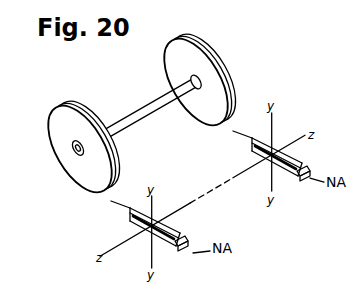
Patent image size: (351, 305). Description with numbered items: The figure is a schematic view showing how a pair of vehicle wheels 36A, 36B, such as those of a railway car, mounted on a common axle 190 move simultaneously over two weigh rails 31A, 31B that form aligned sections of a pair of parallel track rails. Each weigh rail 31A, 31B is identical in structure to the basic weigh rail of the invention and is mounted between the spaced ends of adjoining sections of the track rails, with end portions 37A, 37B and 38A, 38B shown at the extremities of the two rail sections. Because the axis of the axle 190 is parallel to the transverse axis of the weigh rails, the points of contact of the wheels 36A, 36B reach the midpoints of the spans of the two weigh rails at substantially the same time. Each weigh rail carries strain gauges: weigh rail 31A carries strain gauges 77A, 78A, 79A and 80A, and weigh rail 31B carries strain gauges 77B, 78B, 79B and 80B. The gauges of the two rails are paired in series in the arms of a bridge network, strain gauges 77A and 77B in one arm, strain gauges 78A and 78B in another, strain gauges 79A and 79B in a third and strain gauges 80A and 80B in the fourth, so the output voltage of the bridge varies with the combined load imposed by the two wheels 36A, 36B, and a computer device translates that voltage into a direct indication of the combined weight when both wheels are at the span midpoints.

The axle 190 is at (142, 110).
The wheel 36A is at (60, 134).
The wheel 36B is at (178, 45).
The weigh rail 31A is at (148, 220).
The weigh rail 31B is at (269, 146).
The end of beam 37A is at (110, 218).
The end of beam 37B is at (230, 149).
The mounting tab 38A is at (202, 235).
The mounting tab 38B is at (319, 166).
The strain gauge 77A is at (141, 242).
The strain gauge 77B is at (262, 171).
The strain gauge 78A is at (161, 253).
The strain gauge 78B is at (282, 186).
The strain gauge 79A is at (131, 231).
The strain gauge 79B is at (254, 161).
The strain gauge 80A is at (196, 259).
The strain gauge 80B is at (313, 191).